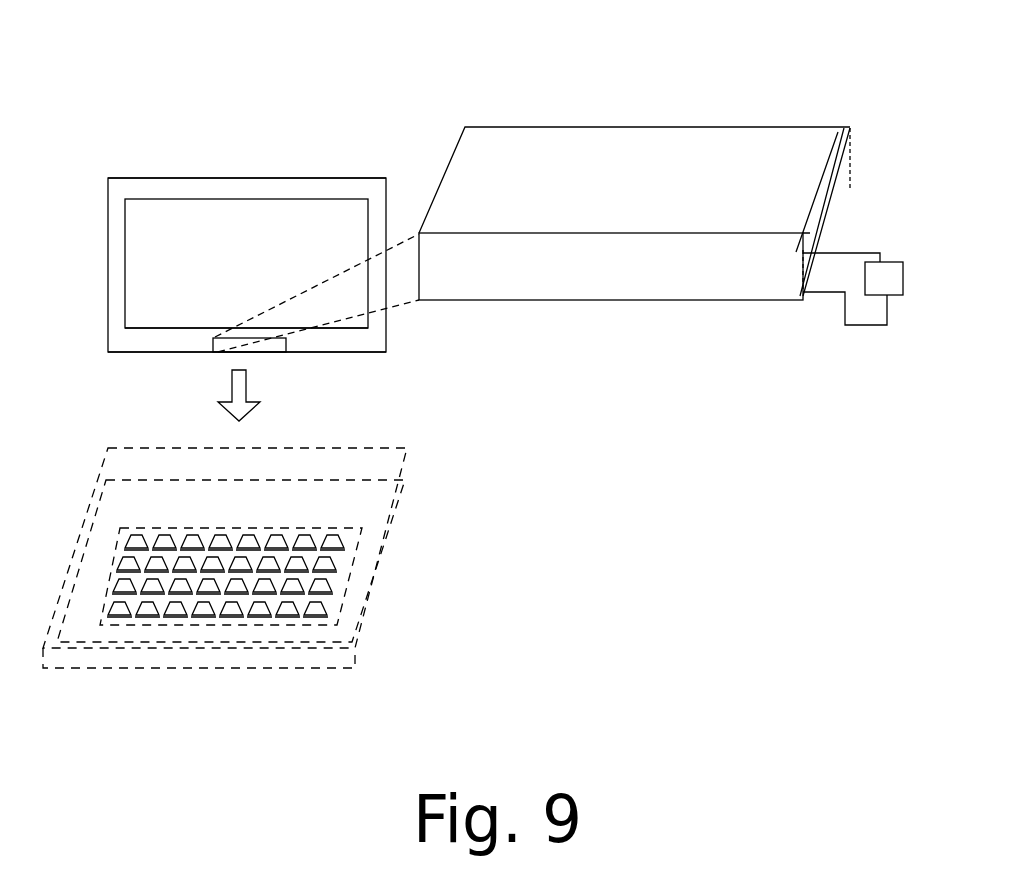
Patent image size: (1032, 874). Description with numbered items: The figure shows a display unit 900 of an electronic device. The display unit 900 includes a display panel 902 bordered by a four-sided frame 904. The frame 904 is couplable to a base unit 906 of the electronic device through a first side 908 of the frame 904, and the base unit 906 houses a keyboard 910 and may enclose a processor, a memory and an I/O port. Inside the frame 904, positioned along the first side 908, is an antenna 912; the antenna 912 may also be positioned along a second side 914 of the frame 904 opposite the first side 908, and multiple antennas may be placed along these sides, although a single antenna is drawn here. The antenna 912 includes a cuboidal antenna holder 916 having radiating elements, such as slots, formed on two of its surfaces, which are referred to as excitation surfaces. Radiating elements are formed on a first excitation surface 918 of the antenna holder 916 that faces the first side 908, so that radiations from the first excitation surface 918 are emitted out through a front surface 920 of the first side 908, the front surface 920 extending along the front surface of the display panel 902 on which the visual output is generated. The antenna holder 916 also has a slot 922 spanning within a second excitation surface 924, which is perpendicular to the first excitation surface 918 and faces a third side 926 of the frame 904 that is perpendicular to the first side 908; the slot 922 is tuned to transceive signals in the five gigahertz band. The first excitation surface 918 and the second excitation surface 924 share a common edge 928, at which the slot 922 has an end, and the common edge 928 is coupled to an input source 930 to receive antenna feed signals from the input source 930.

The display unit 900 is at (197, 80).
The display panel 902 is at (267, 220).
The frame 904 is at (128, 190).
The base unit 906 is at (370, 587).
The first side 908 is at (176, 355).
The keyboard 910 is at (313, 568).
The antenna 912 is at (207, 338).
The second side 914 is at (186, 178).
The antenna holder 916 is at (650, 100).
The first excitation surface 918 is at (612, 272).
The front surface 920 is at (167, 340).
The slot 922 is at (810, 231).
The second excitation surface 924 is at (828, 181).
The third side 926 is at (386, 330).
The common edge 928 is at (803, 292).
The input source 930 is at (890, 287).